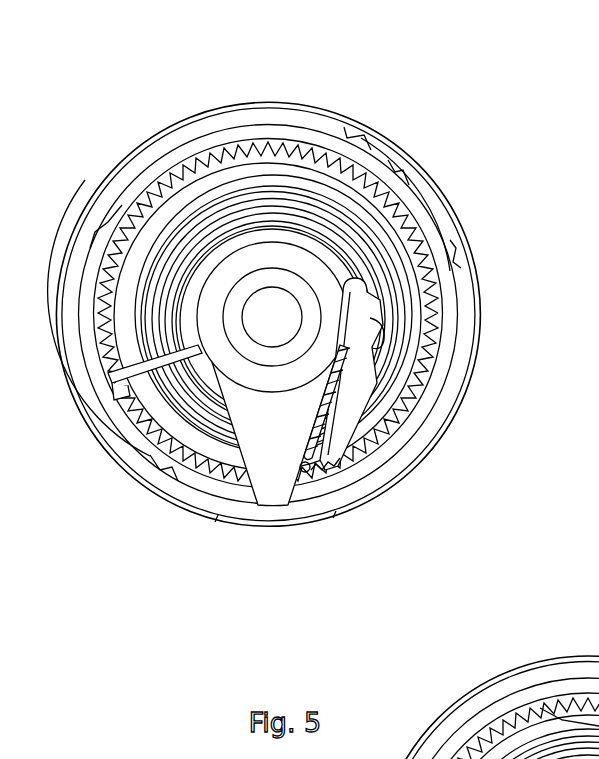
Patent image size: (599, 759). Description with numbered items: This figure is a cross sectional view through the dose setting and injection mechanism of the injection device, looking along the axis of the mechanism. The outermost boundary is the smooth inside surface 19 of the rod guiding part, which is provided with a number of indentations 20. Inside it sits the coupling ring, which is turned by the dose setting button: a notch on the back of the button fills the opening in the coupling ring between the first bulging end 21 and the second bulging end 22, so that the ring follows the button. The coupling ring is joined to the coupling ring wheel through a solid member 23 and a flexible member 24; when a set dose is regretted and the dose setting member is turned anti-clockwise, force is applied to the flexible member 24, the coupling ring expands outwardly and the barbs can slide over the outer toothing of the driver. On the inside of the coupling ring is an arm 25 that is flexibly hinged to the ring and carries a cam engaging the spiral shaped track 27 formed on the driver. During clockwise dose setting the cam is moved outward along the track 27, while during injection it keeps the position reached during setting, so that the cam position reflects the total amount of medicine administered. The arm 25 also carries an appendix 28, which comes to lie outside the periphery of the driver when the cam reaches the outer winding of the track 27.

The inside surface 19 is at (276, 128).
The indentations 20 is at (453, 257).
The first bulging end 21 is at (256, 503).
The second bulging end 22 is at (160, 478).
The solid member 23 is at (276, 470).
The flexible member 24 is at (120, 400).
The arm 25 is at (355, 413).
The spiral shaped track 27 is at (225, 192).
The appendix 28 is at (386, 327).